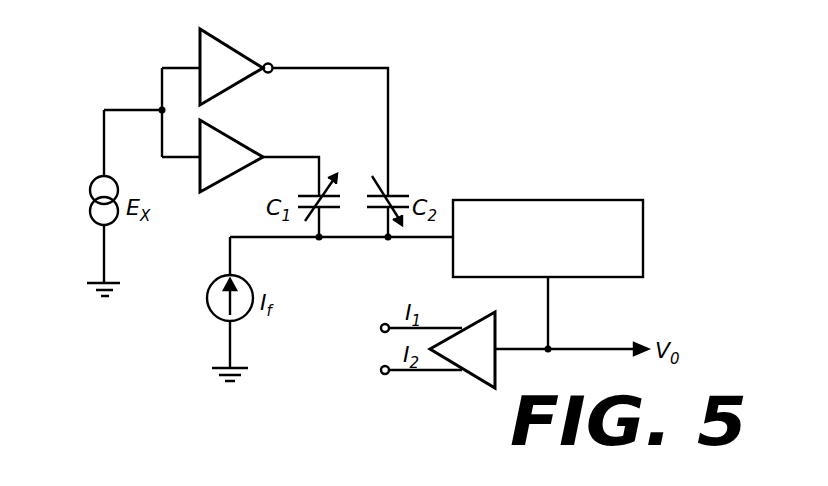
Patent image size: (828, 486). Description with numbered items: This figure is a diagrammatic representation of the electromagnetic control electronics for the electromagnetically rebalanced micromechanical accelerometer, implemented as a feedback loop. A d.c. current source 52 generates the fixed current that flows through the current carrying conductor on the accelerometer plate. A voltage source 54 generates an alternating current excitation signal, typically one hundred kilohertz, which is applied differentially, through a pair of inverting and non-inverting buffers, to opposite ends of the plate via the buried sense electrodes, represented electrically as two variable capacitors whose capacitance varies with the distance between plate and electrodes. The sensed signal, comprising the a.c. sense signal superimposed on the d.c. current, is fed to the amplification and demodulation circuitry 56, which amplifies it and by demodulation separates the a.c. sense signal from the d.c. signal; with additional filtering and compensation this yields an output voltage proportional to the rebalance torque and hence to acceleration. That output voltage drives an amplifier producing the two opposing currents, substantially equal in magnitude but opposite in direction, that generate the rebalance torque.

The d.c. current source 52 is at (208, 296).
The voltage source 54 is at (92, 201).
The amplification and demodulation circuitry 56 is at (554, 200).